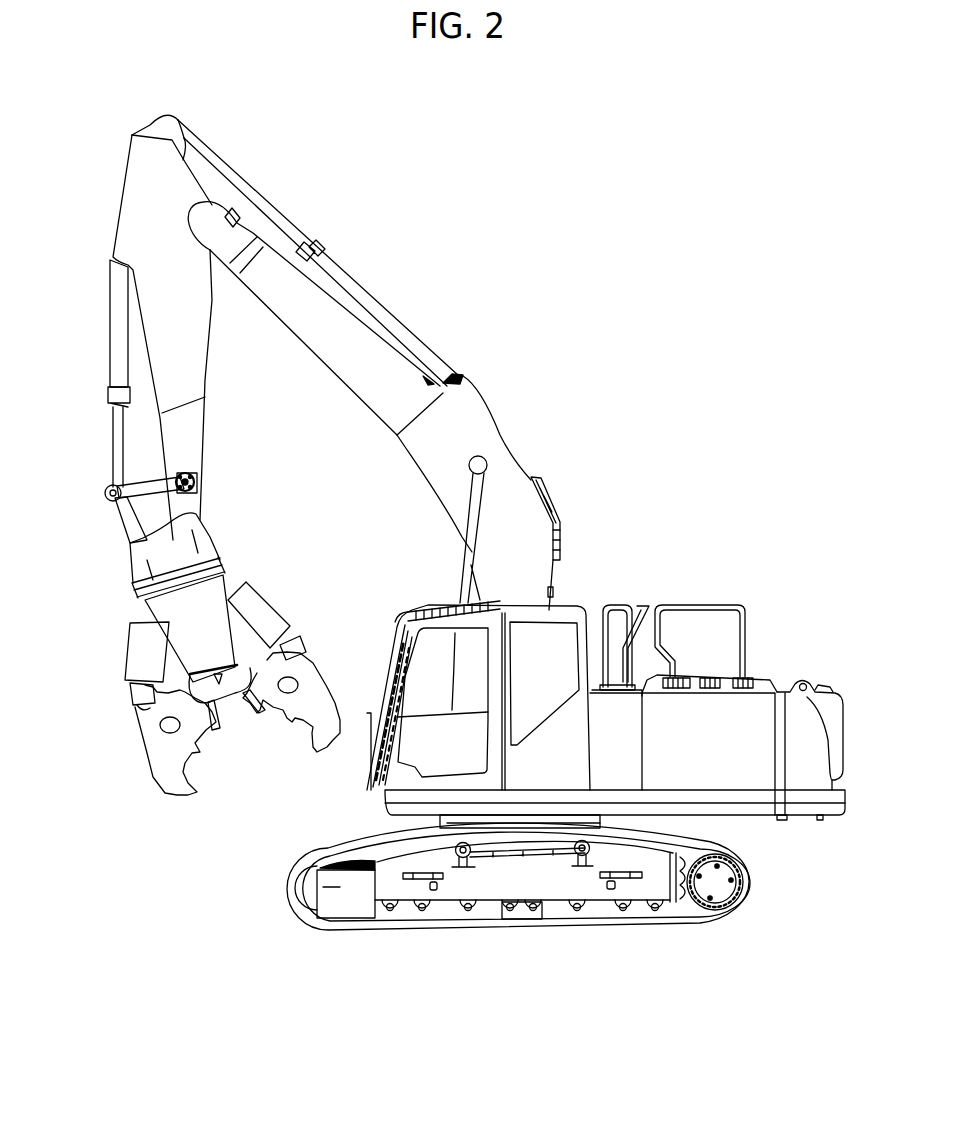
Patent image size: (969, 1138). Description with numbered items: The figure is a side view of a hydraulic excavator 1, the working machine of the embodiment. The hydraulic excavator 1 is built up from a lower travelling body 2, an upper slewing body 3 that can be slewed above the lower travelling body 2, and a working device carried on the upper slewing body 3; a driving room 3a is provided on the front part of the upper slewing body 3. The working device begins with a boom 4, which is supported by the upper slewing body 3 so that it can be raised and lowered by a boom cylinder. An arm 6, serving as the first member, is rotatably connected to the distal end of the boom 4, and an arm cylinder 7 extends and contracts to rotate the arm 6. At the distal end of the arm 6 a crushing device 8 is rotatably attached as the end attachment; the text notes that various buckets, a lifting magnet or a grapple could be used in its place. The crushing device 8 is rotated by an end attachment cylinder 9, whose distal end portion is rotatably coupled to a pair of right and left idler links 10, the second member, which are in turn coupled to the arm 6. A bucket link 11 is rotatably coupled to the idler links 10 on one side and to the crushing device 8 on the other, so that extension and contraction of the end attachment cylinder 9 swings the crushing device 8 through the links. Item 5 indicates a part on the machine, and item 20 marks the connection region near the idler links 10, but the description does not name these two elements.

The hydraulic excavator 1 is at (569, 303).
The lower travelling body 2 is at (650, 880).
The upper slewing body 3 is at (775, 795).
The driving room 3a is at (383, 677).
The boom 4 is at (513, 510).
The rod / antenna on cab 5 is at (467, 563).
The arm 6 is at (143, 170).
The arm cylinder 7 is at (370, 288).
The crushing device 8 is at (190, 632).
The end attachment cylinder 9 is at (120, 352).
The idler links 10 is at (147, 486).
The bucket link 11 is at (122, 523).
The pin / detection unit 20 is at (212, 490).